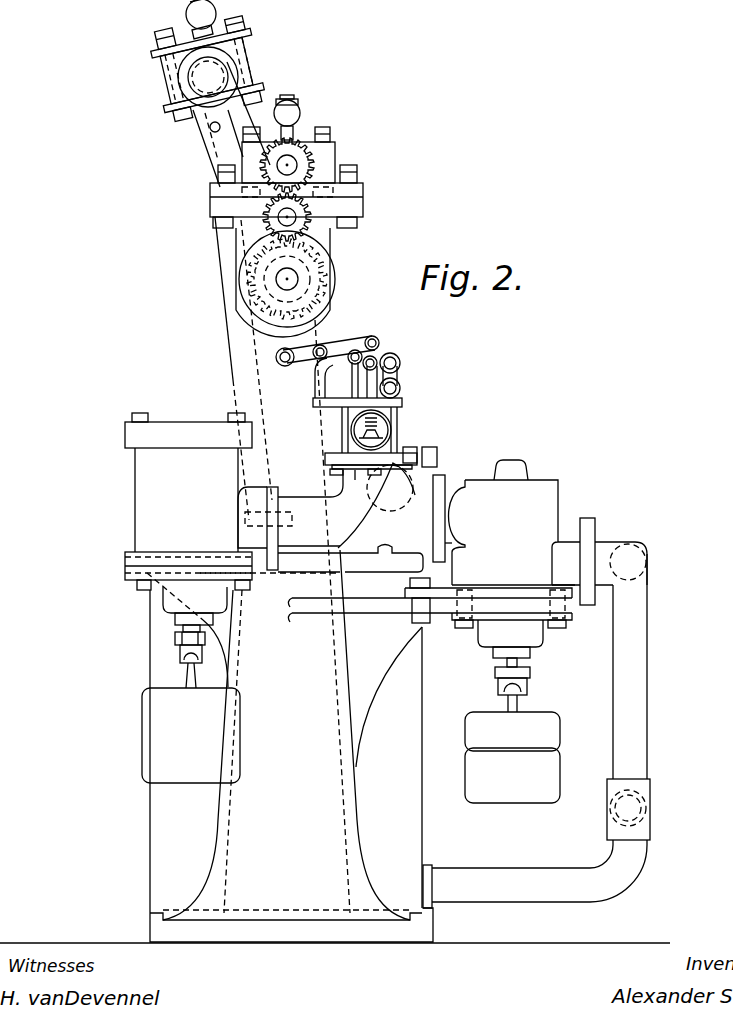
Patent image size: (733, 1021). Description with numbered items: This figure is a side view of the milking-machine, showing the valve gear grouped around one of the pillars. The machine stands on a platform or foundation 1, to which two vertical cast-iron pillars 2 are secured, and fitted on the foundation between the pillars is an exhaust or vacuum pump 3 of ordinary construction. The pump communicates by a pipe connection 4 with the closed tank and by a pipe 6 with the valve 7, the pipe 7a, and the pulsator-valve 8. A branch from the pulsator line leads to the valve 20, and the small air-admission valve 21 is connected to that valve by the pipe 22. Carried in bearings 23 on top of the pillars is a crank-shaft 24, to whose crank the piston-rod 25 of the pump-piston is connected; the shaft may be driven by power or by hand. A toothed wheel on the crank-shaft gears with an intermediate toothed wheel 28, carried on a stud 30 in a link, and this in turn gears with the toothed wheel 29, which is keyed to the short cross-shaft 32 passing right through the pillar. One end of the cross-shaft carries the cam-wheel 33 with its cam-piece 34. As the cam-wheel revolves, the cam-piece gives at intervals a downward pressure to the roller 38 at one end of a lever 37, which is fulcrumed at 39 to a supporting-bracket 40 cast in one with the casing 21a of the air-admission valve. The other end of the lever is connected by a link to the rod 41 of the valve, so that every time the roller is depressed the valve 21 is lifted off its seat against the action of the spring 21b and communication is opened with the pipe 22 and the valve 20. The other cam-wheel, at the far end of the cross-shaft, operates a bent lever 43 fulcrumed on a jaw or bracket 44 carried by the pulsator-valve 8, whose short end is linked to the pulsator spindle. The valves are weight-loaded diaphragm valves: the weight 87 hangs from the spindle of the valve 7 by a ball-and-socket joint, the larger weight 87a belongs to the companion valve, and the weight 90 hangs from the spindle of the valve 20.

The platform or foundation 1 is at (107, 932).
The vertical cast-iron pillar 2 is at (278, 620).
The exhaust or vacuum pump 3 is at (389, 715).
The pipe connection 4 is at (507, 870).
The pipe 6 is at (620, 728).
The valve 7 is at (548, 586).
The pipe 7a is at (420, 508).
The pulsator-valve 8 is at (440, 460).
The valve 20 is at (188, 550).
The small air-admission valve 21 is at (368, 436).
The casing 21a is at (400, 418).
The spring 21b is at (362, 423).
The pipe 22 is at (311, 518).
The bearing 23 is at (313, 165).
The crank-shaft 24 is at (243, 107).
The piston-rod 25 is at (226, 277).
The intermediate toothed wheel 28 is at (314, 219).
The toothed wheel 29 is at (333, 297).
The stud 30 is at (266, 219).
The short cross-shaft 32 is at (289, 280).
The cam-wheel 33 is at (333, 270).
The cam-piece 34 is at (243, 317).
The lever 37 is at (335, 347).
The roller 38 is at (283, 367).
The fulcrum 39 is at (317, 363).
The supporting-bracket 40 is at (327, 400).
The rod 41 is at (402, 385).
The bent lever 43 is at (378, 355).
The jaw or bracket 44 is at (353, 373).
The weight 87 is at (512, 731).
The weight 87a is at (512, 775).
The weight 90 is at (191, 735).